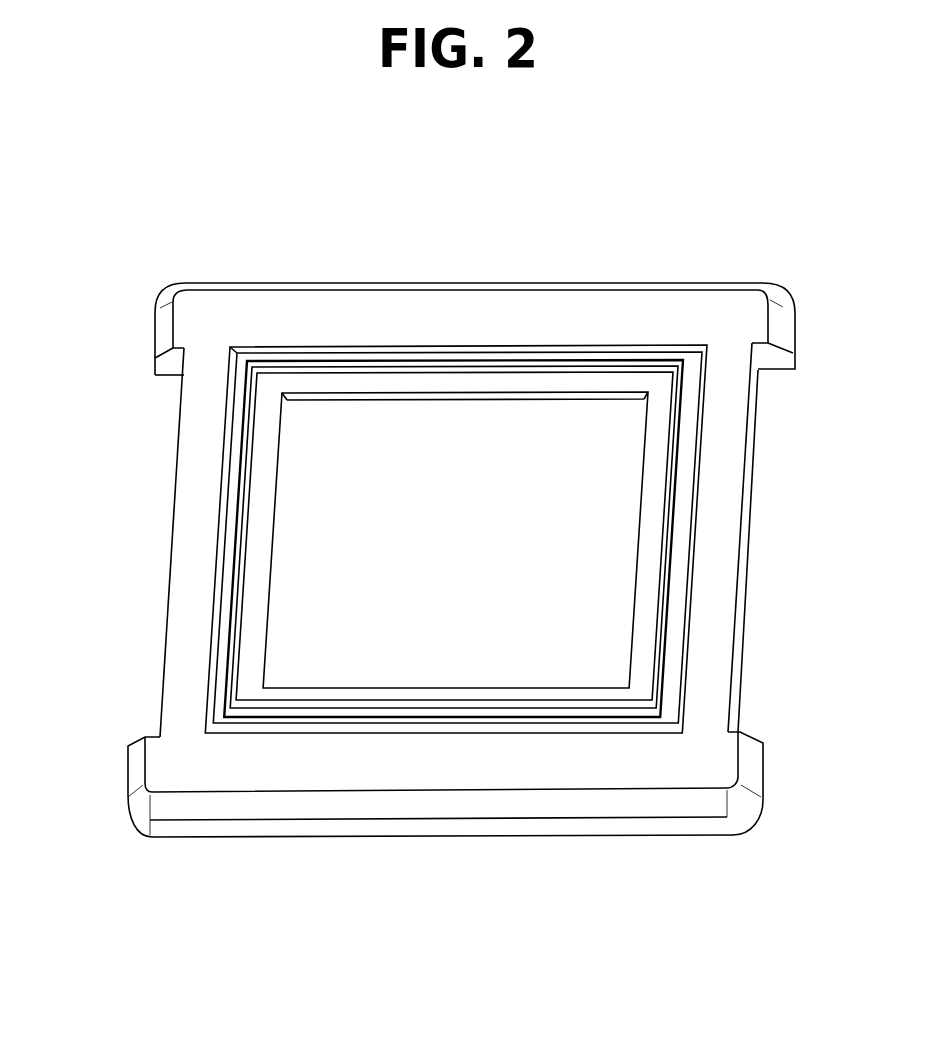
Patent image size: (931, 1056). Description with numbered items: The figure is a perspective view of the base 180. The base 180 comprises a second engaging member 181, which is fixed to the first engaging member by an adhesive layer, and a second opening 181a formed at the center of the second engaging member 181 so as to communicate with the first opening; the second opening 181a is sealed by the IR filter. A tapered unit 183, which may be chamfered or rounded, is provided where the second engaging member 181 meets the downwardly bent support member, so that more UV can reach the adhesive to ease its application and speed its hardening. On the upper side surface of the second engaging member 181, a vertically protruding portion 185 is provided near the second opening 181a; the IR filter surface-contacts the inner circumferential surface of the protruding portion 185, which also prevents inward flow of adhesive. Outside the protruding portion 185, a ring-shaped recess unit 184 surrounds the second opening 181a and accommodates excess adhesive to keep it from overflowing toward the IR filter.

The base 180 is at (148, 217).
The second engaging member 181 is at (188, 497).
The second opening 181a is at (441, 432).
The tapered unit 183 is at (143, 798).
The recess unit 184 is at (241, 361).
The protruding portion 185 is at (256, 368).